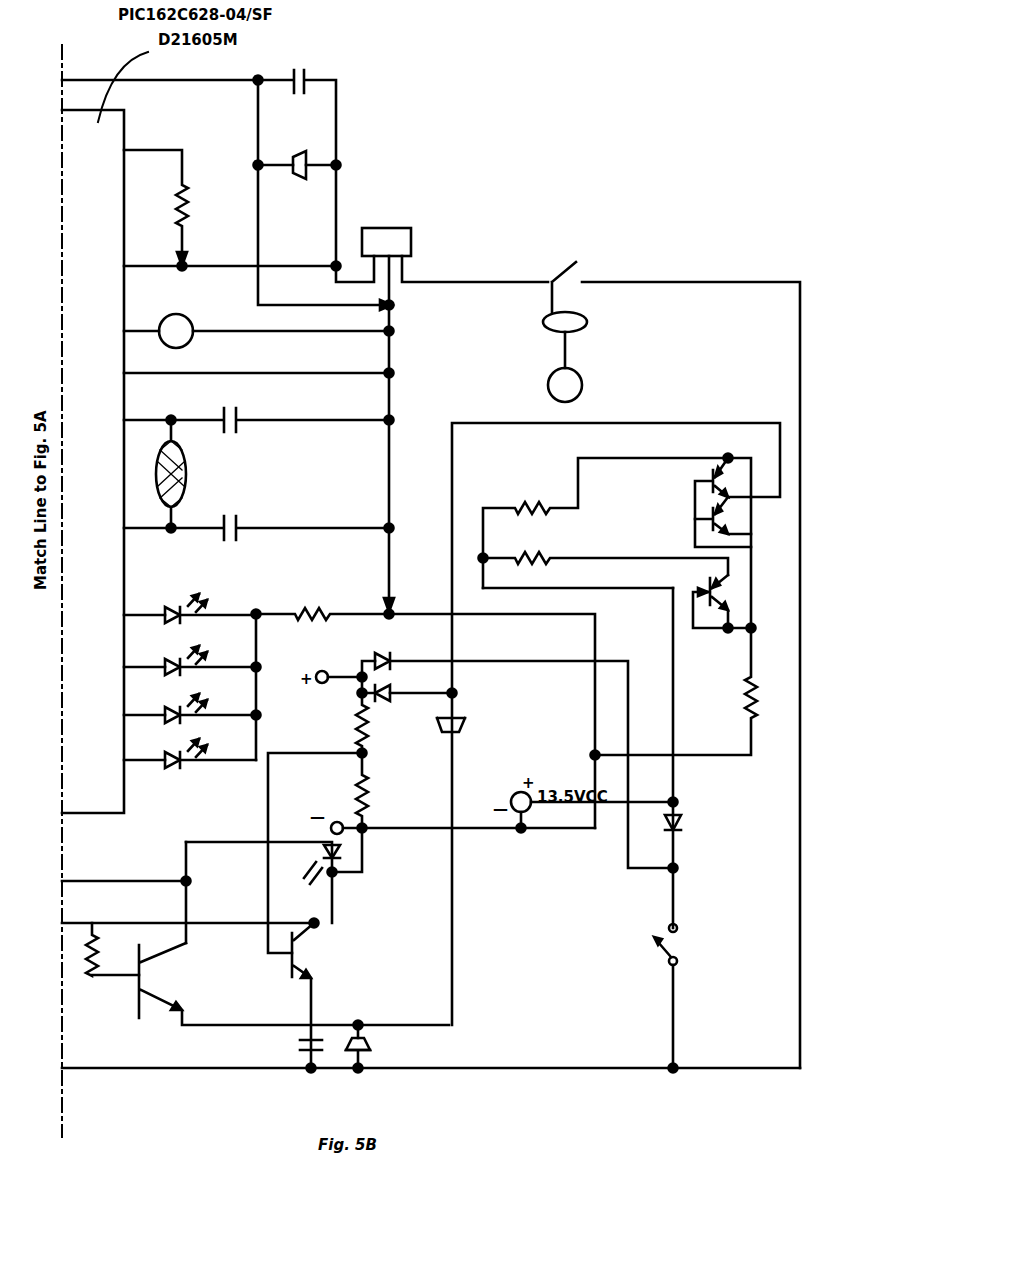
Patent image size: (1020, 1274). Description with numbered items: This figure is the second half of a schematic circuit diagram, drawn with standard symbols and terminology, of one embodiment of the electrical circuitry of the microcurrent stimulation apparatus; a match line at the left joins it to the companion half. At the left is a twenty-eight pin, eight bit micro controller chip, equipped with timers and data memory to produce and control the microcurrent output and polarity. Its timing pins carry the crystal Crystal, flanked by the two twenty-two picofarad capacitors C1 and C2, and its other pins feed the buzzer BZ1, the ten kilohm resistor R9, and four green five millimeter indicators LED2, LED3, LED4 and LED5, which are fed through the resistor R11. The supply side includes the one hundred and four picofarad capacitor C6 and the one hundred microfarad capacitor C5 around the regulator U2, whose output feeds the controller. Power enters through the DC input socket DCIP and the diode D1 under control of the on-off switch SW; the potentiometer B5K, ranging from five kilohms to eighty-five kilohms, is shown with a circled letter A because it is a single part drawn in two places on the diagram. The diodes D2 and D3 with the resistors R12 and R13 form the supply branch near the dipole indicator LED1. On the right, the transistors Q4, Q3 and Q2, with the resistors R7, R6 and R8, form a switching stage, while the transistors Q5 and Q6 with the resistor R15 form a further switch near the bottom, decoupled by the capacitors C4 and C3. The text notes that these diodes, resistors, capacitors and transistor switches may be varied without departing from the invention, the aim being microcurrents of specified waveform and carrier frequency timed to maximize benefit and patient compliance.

The capacitor C6 is at (201, 164).
The capacitor C5 is at (317, 162).
The resistor R9 is at (176, 200).
The buzzer BZ1 is at (259, 336).
The capacitor C1 is at (259, 419).
The crystal Crystal is at (221, 474).
The capacitor C2 is at (259, 527).
The voltage regulator U2 is at (455, 405).
The potentiometer with switch B5K is at (646, 650).
The resistor R11 is at (424, 707).
The green LED LED2 is at (190, 615).
The green LED LED3 is at (190, 668).
The green LED LED4 is at (190, 715).
The green LED LED5 is at (190, 762).
The diode D2 is at (516, 755).
The diode D3 is at (407, 701).
The resistor R12 is at (334, 724).
The resistor R13 is at (360, 812).
The DC input socket DCIP is at (481, 732).
The diode D1 is at (698, 758).
The on-off switch SW is at (636, 990).
The resistor R8 is at (676, 691).
The resistor R7 is at (617, 541).
The resistor R6 is at (545, 562).
The transistor Q4 is at (717, 490).
The transistor Q3 is at (734, 515).
The transistor Q2 is at (734, 597).
The dipole LED LED1 is at (289, 882).
The transistor Q6 is at (294, 984).
The resistor R15 is at (112, 949).
The transistor Q5 is at (330, 998).
The capacitor C4 is at (280, 1068).
The capacitor C3 is at (410, 1059).